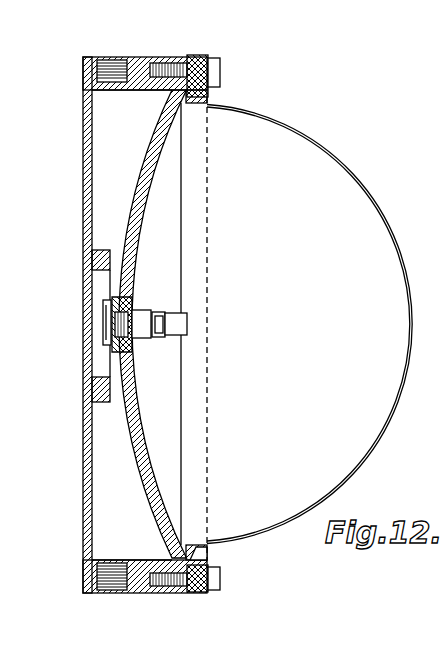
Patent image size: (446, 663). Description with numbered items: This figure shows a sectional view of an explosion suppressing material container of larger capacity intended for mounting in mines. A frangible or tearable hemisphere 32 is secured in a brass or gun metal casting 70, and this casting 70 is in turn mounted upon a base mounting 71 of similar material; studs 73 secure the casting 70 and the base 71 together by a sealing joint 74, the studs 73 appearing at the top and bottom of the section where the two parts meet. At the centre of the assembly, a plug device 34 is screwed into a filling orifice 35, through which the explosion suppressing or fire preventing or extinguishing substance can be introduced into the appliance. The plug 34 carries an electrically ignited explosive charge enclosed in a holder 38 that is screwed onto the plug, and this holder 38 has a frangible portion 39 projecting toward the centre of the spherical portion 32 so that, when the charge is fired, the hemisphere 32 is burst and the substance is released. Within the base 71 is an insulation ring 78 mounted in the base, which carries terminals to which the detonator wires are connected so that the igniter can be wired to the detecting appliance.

The frangible hemisphere 32 is at (308, 137).
The plug device 34 is at (113, 297).
The filling orifice 35 is at (134, 308).
The holder 38 is at (158, 340).
The frangible portion 39 is at (188, 318).
The casting 70 is at (163, 127).
The base mounting 71 is at (83, 73).
The studs 73 is at (217, 591).
The sealing joint 74 is at (203, 564).
The insulation ring 78 is at (107, 403).